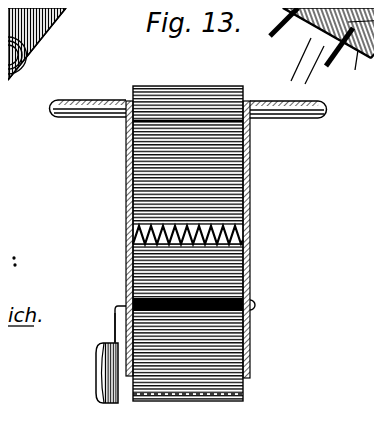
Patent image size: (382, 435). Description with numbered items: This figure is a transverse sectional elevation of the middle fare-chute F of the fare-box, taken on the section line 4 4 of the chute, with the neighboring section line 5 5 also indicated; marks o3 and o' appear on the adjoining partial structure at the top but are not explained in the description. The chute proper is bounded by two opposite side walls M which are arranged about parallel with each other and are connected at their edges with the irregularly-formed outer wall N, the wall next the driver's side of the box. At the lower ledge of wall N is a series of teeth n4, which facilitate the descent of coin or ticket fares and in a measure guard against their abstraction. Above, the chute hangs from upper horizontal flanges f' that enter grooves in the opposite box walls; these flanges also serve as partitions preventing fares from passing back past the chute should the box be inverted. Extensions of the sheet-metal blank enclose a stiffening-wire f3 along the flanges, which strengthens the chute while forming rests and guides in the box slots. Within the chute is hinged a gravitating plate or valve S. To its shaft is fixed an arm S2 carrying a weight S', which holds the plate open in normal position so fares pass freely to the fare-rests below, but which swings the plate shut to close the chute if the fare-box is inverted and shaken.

The fare-chute F is at (164, 243).
The outer wall N is at (188, 156).
The teeth n4 is at (188, 227).
The gravitating plate or valve S is at (188, 322).
The side walls M is at (119, 202).
The stiffening-wire f3 is at (334, 103).
The upper horizontal flanges f' is at (188, 134).
The weight S' is at (127, 344).
The arm S2 is at (107, 318).
The section line 4 4 is at (283, 66).
The section line 5 5 is at (322, 76).
The pin o3 is at (344, 71).
The pin o' is at (366, 73).